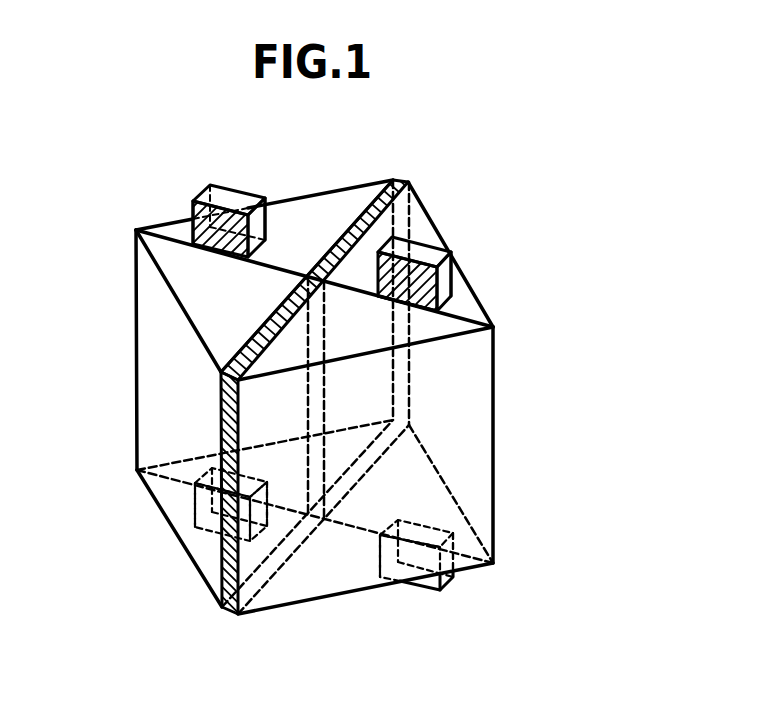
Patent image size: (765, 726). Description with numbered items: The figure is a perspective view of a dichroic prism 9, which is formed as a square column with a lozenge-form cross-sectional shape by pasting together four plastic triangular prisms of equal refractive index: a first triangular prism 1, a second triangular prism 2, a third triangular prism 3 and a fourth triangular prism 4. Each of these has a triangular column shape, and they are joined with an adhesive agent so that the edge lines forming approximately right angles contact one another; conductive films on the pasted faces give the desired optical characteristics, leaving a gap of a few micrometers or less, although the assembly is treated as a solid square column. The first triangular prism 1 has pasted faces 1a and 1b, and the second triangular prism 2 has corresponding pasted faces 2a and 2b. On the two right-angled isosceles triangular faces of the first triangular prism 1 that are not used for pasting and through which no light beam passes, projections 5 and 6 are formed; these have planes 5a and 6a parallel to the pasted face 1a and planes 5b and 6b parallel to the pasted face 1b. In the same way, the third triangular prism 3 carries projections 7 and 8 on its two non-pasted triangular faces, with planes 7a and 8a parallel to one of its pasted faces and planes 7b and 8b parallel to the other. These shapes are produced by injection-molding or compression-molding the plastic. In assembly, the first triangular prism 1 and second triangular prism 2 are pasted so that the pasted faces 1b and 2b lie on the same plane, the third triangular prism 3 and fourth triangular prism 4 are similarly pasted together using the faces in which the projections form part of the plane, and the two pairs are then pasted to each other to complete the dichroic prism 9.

The first triangular prism 1 is at (317, 208).
The pasted face 1a is at (182, 228).
The pasted face 1b is at (353, 211).
The second triangular prism 2 is at (178, 262).
The pasted face 2a is at (175, 413).
The pasted face 2b is at (220, 583).
The third triangular prism 3 is at (418, 220).
The fourth triangular prism 4 is at (432, 328).
The projection 5 is at (227, 184).
The plane 5a is at (189, 224).
The plane 5b is at (263, 223).
The projection 6 is at (215, 535).
The plane 6a is at (203, 510).
The plane 6b is at (258, 518).
The projection 7 is at (437, 239).
The plane 7a is at (457, 304).
The plane 7b is at (440, 283).
The projection 8 is at (423, 587).
The plane 8a is at (390, 553).
The plane 8b is at (447, 560).
The dichroic prism 9 is at (495, 483).